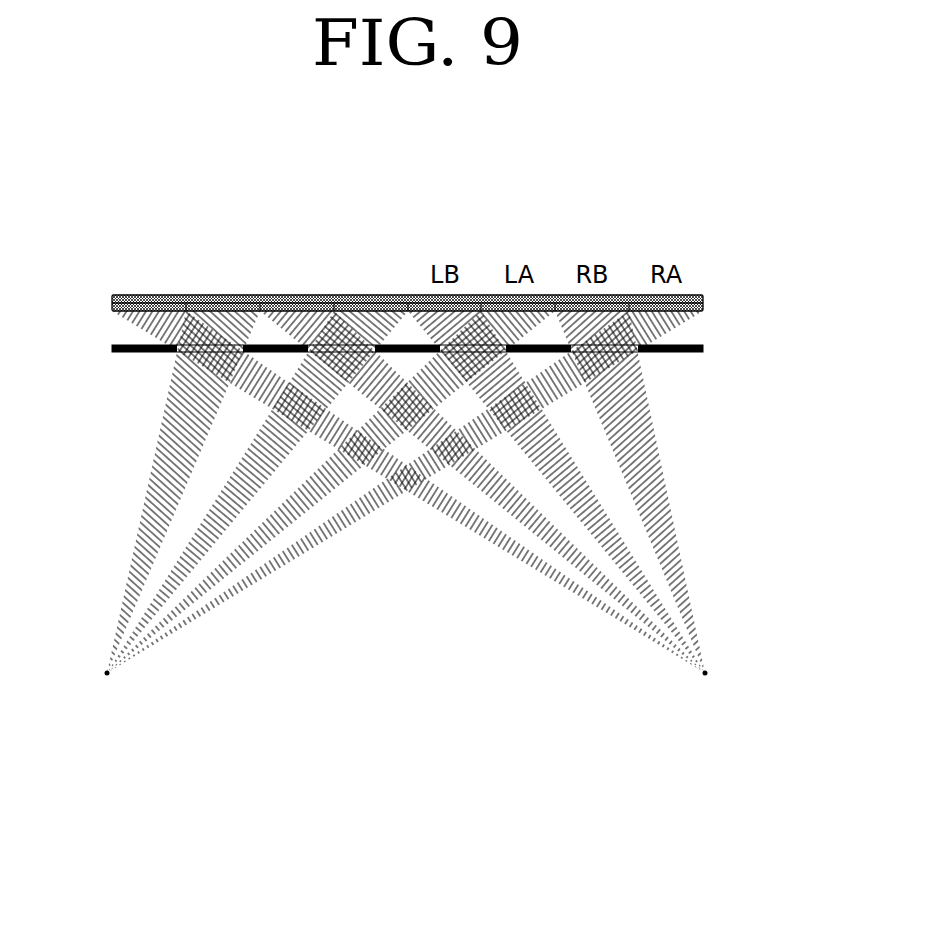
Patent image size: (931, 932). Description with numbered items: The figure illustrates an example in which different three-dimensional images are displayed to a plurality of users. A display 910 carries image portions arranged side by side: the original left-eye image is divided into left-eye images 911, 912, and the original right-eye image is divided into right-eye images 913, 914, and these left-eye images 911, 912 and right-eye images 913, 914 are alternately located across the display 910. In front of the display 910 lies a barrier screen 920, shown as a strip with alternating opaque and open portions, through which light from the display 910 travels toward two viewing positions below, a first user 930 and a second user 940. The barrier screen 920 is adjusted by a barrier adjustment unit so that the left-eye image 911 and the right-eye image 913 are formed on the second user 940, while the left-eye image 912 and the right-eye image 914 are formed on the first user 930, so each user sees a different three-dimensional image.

The display 910 is at (705, 286).
The left-eye image 911 is at (148, 258).
The left-eye image 912 is at (222, 258).
The right-eye image 913 is at (296, 258).
The right-eye image 914 is at (370, 258).
The barrier screen 920 is at (706, 342).
The first user 930 is at (108, 706).
The second user 940 is at (705, 712).